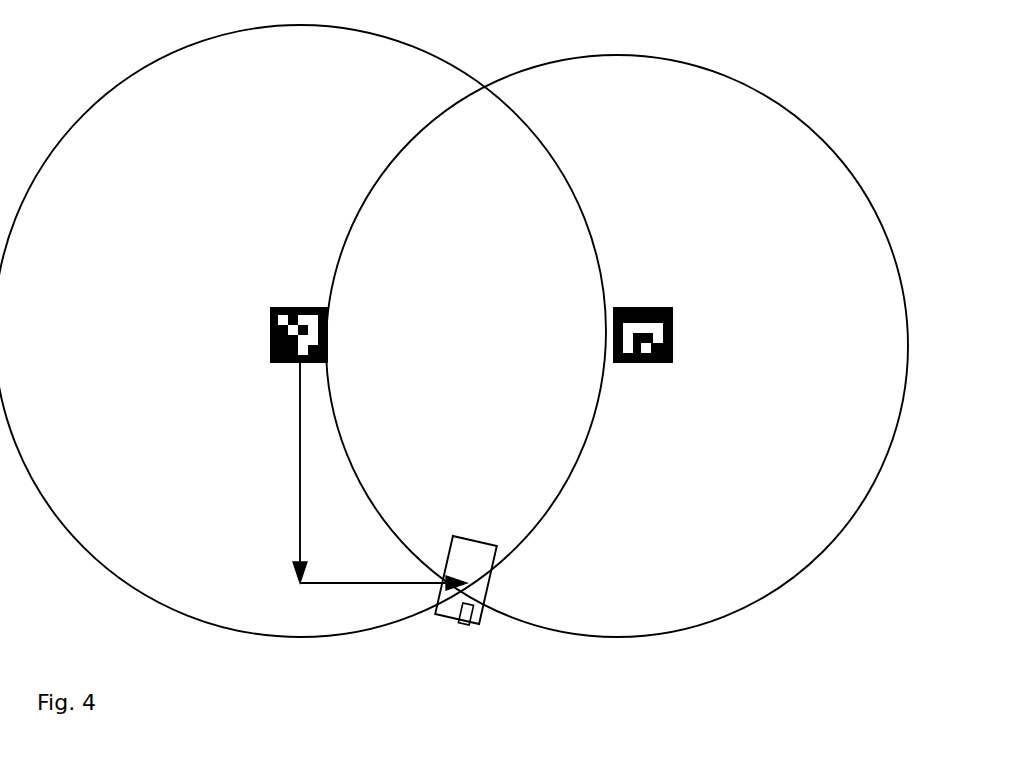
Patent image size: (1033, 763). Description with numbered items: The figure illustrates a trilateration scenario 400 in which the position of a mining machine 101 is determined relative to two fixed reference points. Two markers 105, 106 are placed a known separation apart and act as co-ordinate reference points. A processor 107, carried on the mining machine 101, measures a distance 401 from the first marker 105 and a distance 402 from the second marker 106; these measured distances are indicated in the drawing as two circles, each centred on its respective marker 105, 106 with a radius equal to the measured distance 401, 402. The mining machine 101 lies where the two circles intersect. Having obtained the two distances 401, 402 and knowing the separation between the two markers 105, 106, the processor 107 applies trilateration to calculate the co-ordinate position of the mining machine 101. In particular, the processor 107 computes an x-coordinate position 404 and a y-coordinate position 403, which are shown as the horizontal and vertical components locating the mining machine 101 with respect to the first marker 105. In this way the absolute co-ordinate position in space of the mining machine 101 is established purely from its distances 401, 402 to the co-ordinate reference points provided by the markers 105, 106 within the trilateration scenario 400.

The trilateration scenario 400 is at (82, 78).
The distance 401 is at (133, 590).
The distance 402 is at (688, 633).
The marker 105 is at (300, 307).
The marker 106 is at (640, 307).
The y-coordinate position 403 is at (298, 473).
The x-coordinate position 404 is at (367, 584).
The mining machine 101 is at (483, 582).
The processor 107 is at (463, 620).